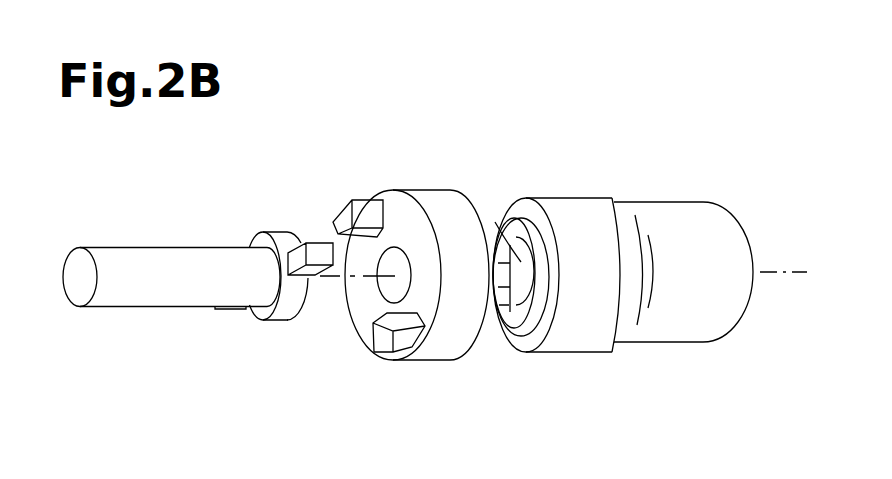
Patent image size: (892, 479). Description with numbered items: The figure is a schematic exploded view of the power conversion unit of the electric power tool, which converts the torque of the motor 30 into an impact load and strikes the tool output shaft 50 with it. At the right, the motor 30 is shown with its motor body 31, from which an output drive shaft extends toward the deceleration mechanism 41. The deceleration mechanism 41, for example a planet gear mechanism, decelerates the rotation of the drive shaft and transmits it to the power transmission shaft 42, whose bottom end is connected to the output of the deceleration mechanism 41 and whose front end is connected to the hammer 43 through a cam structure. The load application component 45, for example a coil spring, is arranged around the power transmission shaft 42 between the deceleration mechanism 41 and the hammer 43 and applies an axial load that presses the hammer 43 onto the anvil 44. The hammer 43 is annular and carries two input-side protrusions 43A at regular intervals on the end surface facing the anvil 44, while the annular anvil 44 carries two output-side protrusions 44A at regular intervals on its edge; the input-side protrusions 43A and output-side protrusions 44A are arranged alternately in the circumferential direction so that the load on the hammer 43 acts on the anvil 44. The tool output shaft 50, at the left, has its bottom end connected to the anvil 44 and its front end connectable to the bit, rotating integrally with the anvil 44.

The motor 30 is at (746, 353).
The motor body 31 is at (676, 344).
The deceleration mechanism 41 is at (572, 196).
The power transmission shaft 42 is at (520, 232).
The hammer 43 is at (431, 190).
The input-side protrusion 43A is at (346, 201).
The anvil 44 is at (273, 321).
The output-side protrusion 44A is at (302, 242).
The load application component 45 is at (503, 333).
The tool output shaft 50 is at (112, 246).